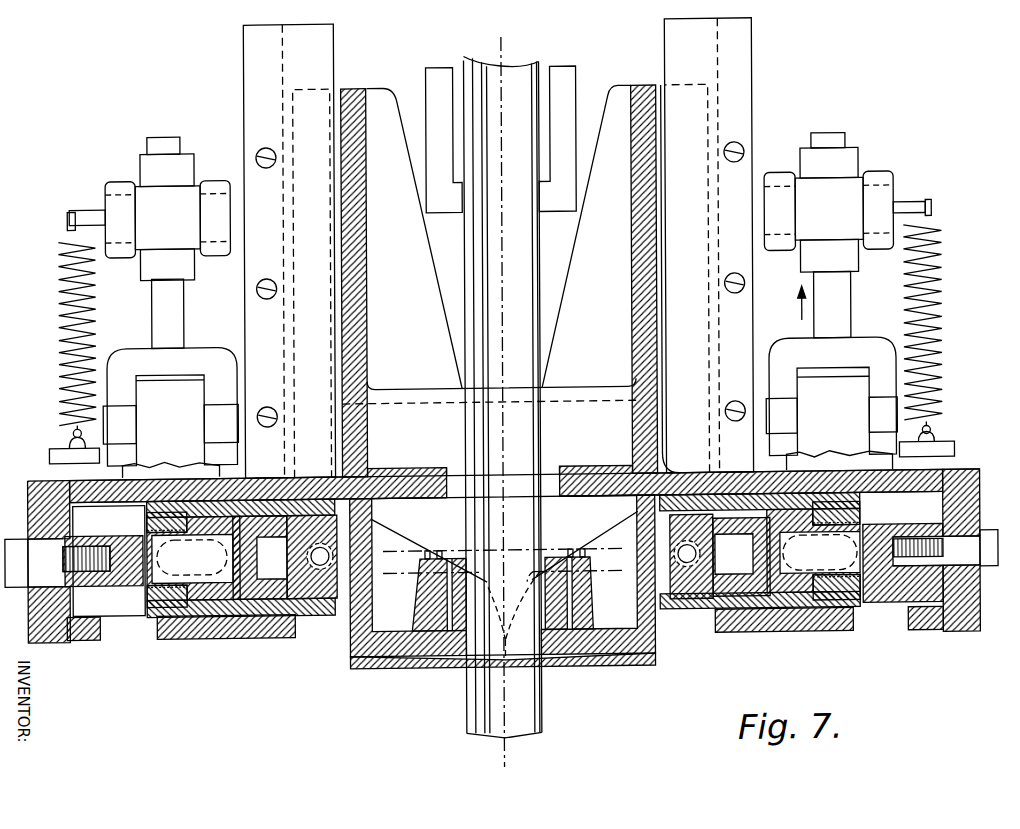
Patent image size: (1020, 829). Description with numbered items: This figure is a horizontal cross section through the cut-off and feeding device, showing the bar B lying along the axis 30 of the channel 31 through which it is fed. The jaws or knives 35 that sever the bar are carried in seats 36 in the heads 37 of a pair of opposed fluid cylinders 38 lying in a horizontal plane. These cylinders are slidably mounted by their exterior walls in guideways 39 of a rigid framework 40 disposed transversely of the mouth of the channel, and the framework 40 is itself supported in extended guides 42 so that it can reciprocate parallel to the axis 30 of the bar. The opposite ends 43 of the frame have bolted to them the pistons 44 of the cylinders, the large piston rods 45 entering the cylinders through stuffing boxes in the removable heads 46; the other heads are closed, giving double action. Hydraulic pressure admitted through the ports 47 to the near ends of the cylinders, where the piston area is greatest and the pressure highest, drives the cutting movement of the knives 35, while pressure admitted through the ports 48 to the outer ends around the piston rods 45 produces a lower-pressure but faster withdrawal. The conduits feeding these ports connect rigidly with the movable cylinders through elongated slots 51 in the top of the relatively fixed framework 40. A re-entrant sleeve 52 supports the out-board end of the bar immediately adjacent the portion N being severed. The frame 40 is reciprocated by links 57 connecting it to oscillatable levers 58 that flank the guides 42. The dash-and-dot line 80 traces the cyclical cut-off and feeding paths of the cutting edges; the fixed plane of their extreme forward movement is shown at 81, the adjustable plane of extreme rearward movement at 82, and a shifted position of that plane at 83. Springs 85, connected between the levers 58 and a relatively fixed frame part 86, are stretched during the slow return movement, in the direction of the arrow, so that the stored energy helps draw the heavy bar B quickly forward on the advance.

The axis 30 is at (502, 396).
The channel 31 is at (570, 80).
The jaws or knives 35 is at (422, 662).
The seats 36 is at (387, 662).
The heads of fluid cylinders 37 is at (337, 613).
The fluid cylinders 38 is at (285, 613).
The guideways 39 is at (173, 617).
The rigid framework 40 is at (67, 668).
The extended guides 42 is at (303, 115).
The opposite ends of the frame 43 is at (35, 505).
The pistons 44 is at (292, 612).
The piston rods 45 is at (150, 575).
The removable heads 46 is at (170, 603).
The ports 47 is at (372, 530).
The ports 48 is at (235, 556).
The elongated slots 51 is at (315, 475).
The re-entrant sleeve 52 is at (468, 672).
The links 57 is at (177, 305).
The oscillatable levers 58 is at (122, 182).
The cyclical paths 80 is at (503, 542).
The fixed plane of extreme forward movement 81 is at (655, 658).
The plane of extreme rearward movement 82 is at (615, 572).
The shifted plane position 83 is at (620, 548).
The springs 85 is at (98, 312).
The frame 86 is at (53, 443).
The bar B is at (532, 433).
The portion being severed N is at (533, 723).